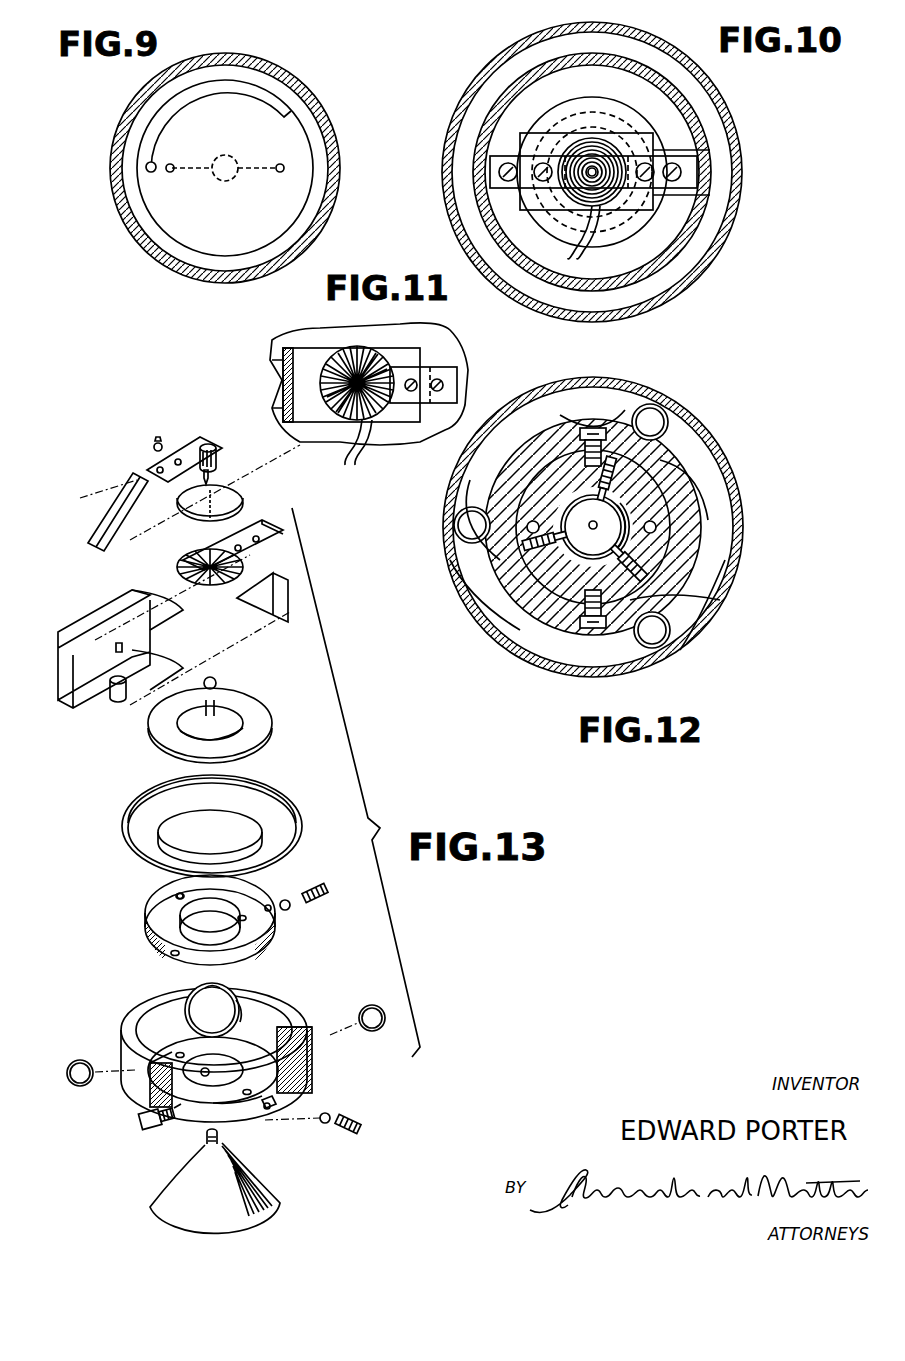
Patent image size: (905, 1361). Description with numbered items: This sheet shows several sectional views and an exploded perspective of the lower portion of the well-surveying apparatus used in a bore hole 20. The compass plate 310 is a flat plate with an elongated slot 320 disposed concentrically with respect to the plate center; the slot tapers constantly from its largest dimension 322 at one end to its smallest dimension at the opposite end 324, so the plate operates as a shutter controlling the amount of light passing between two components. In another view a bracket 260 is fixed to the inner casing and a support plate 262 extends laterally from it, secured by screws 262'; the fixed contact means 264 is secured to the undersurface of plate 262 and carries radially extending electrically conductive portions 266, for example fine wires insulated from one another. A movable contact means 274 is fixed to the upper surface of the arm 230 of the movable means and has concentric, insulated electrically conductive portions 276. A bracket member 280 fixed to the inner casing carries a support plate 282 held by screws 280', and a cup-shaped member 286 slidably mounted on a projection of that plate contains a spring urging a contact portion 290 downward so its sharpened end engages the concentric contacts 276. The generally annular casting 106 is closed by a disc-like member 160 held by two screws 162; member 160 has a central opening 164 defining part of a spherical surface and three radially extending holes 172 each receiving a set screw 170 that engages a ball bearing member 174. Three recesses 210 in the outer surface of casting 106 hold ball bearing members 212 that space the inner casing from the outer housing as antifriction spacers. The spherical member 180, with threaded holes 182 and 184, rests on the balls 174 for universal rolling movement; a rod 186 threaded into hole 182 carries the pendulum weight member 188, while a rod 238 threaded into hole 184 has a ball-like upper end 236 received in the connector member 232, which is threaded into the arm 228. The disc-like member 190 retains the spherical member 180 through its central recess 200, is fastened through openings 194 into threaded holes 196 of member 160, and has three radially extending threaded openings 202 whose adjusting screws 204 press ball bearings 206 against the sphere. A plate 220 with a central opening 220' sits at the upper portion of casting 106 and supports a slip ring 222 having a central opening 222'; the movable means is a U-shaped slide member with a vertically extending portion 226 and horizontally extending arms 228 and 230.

In FIG. 9, the compass plate 310 is at (306, 128).
In FIG. 9, the elongated slot 320 is at (178, 116).
In FIG. 9, the largest dimension of slot 322 is at (152, 172).
In FIG. 9, the smallest dimension end of slot 324 is at (288, 116).
In FIG. 10, the horizontally extending arm 230 is at (580, 235).
In FIG. 11, the horizontally extending arm 230 is at (310, 352).
In FIG. 13, the horizontally extending arm 230 is at (120, 605).
In FIG. 10, the support plate 262 is at (650, 174).
In FIG. 11, the support plate 262 is at (453, 372).
In FIG. 13, the support plate 262 is at (241, 533).
In FIG. 10, the screws 262' is at (725, 164).
In FIG. 10, the bracket 260 is at (695, 174).
In FIG. 13, the bracket 260 is at (288, 600).
In FIG. 10, the electrically conductive portions 276 is at (583, 236).
In FIG. 13, the electrically conductive portions 276 is at (210, 567).
In FIG. 10, the support plate 282 is at (555, 157).
In FIG. 13, the support plate 282 is at (178, 448).
In FIG. 10, the movable contact means 274 is at (610, 145).
In FIG. 13, the movable contact means 274 is at (225, 505).
In FIG. 10, the screws 280' is at (526, 207).
In FIG. 13, the screws 280' is at (135, 428).
In FIG. 10, the bracket member 280 is at (442, 194).
In FIG. 13, the bracket member 280 is at (127, 512).
In FIG. 11, the vertically extending portion 226 is at (283, 355).
In FIG. 13, the vertically extending portion 226 is at (80, 650).
In FIG. 11, the fixed contact means 264 is at (390, 362).
In FIG. 11, the electrically conductive portions 266 is at (350, 455).
In FIG. 12, the bore hole 20 is at (735, 570).
In FIG. 12, the casting 106 is at (690, 485).
In FIG. 13, the casting 106 is at (312, 1060).
In FIG. 12, the disc-like member 160 is at (665, 460).
In FIG. 13, the disc-like member 160 is at (245, 1120).
In FIG. 12, the central opening 164 is at (570, 510).
In FIG. 13, the central opening 164 is at (225, 1065).
In FIG. 12, the ball bearing member 174 is at (615, 500).
In FIG. 13, the ball bearing member 174 is at (328, 1112).
In FIG. 12, the ball bearing members 212 is at (670, 410).
In FIG. 13, the ball bearing members 212 is at (372, 1005).
In FIG. 12, the recesses 210 is at (675, 445).
In FIG. 12, the screws 162 is at (592, 428).
In FIG. 13, the screws 162 is at (148, 1125).
In FIG. 12, the set screw 170 is at (505, 590).
In FIG. 13, the set screw 170 is at (350, 1132).
In FIG. 12, the radially extending holes 172 is at (600, 458).
In FIG. 13, the radially extending holes 172 is at (178, 1115).
In FIG. 13, the cup-shaped member 286 is at (217, 458).
In FIG. 13, the contact portion 290 is at (210, 478).
In FIG. 13, the horizontally extending arm 228 is at (160, 660).
In FIG. 13, the connector member 232 is at (112, 705).
In FIG. 13, the ball-like upper end 236 is at (218, 678).
In FIG. 13, the slip ring 222 is at (234, 717).
In FIG. 13, the rod 238 is at (225, 728).
In FIG. 13, the central opening 222' is at (175, 755).
In FIG. 13, the plate 220 is at (192, 826).
In FIG. 13, the central opening 220' is at (210, 837).
In FIG. 13, the disc-like member 190 is at (275, 935).
In FIG. 13, the central recess or hole 200 is at (238, 940).
In FIG. 13, the openings 194 is at (165, 952).
In FIG. 13, the adjusting screw 204 is at (175, 893).
In FIG. 13, the radially extending threaded openings 202 is at (320, 884).
In FIG. 13, the ball bearing 206 is at (292, 905).
In FIG. 13, the threaded holes 196 is at (175, 1055).
In FIG. 13, the spherical member 180 is at (236, 995).
In FIG. 13, the threaded hole 184 is at (192, 985).
In FIG. 13, the threaded hole 182 is at (260, 1010).
In FIG. 13, the rod 186 is at (222, 1140).
In FIG. 13, the pendulum weight member 188 is at (278, 1205).